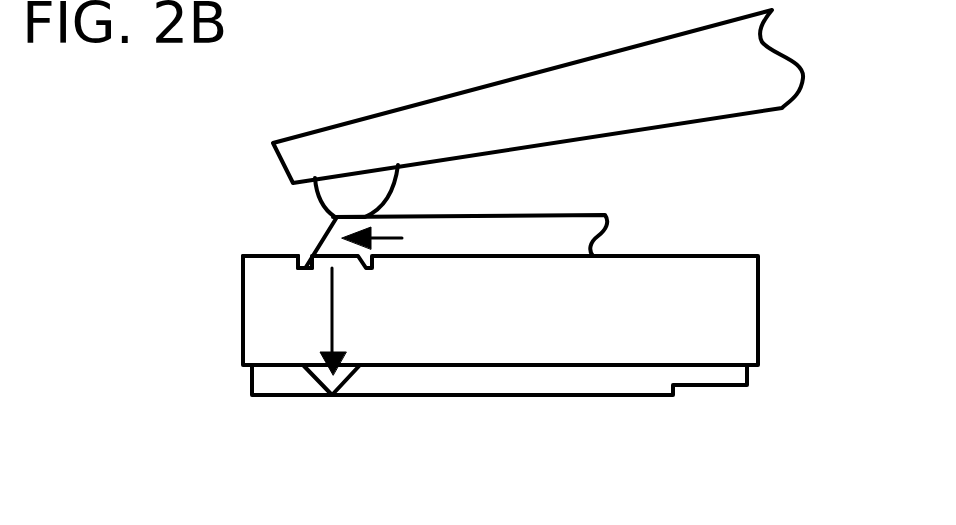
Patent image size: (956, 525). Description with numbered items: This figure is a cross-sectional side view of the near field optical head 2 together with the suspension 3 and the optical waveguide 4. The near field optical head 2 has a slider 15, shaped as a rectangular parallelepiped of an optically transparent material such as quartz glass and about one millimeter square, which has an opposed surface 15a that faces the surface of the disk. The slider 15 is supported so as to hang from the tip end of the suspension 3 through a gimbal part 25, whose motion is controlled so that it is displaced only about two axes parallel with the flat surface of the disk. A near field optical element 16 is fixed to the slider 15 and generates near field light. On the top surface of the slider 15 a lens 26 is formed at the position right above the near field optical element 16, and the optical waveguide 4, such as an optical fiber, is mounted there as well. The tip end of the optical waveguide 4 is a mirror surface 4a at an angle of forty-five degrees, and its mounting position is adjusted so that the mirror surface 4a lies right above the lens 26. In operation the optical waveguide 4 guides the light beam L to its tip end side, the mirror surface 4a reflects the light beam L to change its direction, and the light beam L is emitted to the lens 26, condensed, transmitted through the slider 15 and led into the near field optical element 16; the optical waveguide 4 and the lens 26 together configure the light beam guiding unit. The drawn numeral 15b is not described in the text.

The near field optical head 2 is at (802, 245).
The suspension 3 is at (537, 115).
The optical waveguide 4 is at (547, 235).
The mirror surface 4a is at (328, 230).
The slider 15 is at (673, 275).
The opposed surface 15a is at (444, 128).
The lower substrate layer 15b is at (573, 397).
The near field optical element 16 is at (332, 395).
The gimbal part 25 is at (350, 195).
The lens 26 is at (320, 268).
The light beam L is at (380, 240).